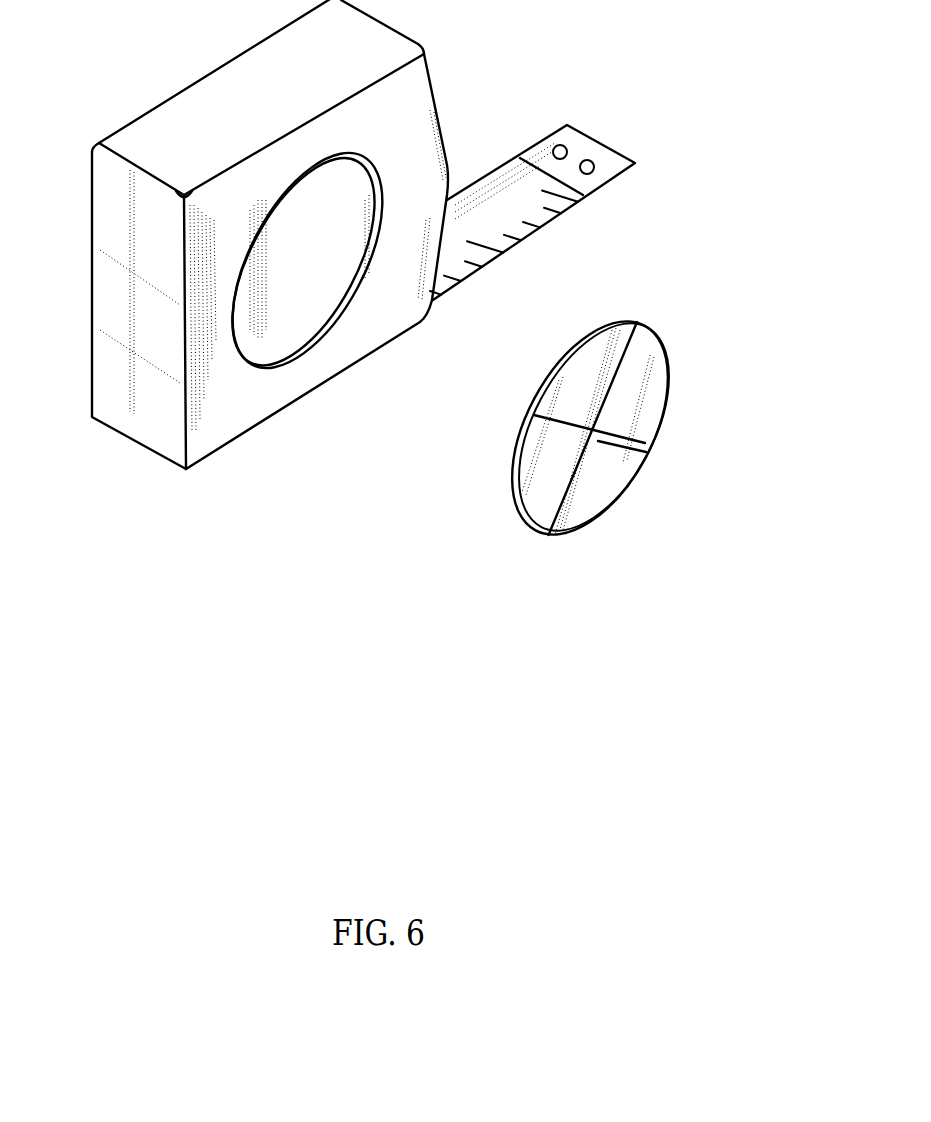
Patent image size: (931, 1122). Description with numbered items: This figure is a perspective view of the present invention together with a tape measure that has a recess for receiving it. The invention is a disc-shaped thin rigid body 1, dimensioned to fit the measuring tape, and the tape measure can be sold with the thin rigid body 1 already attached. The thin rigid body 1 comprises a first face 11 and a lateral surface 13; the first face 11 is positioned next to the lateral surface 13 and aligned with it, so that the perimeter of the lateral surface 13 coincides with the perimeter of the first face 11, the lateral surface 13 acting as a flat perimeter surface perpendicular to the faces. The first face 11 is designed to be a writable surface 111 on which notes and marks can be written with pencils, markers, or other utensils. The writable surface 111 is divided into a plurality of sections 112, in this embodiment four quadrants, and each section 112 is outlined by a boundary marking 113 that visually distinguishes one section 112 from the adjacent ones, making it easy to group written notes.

The thin rigid body 1 is at (590, 430).
The first face 11 is at (647, 508).
The writable surface 111 is at (646, 458).
The sections 112 is at (585, 352).
The boundary marking 113 is at (612, 305).
The lateral surface 13 is at (520, 446).